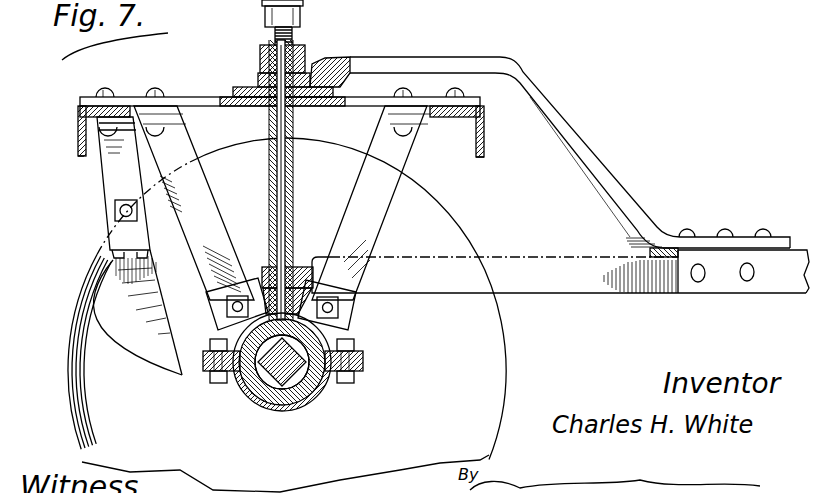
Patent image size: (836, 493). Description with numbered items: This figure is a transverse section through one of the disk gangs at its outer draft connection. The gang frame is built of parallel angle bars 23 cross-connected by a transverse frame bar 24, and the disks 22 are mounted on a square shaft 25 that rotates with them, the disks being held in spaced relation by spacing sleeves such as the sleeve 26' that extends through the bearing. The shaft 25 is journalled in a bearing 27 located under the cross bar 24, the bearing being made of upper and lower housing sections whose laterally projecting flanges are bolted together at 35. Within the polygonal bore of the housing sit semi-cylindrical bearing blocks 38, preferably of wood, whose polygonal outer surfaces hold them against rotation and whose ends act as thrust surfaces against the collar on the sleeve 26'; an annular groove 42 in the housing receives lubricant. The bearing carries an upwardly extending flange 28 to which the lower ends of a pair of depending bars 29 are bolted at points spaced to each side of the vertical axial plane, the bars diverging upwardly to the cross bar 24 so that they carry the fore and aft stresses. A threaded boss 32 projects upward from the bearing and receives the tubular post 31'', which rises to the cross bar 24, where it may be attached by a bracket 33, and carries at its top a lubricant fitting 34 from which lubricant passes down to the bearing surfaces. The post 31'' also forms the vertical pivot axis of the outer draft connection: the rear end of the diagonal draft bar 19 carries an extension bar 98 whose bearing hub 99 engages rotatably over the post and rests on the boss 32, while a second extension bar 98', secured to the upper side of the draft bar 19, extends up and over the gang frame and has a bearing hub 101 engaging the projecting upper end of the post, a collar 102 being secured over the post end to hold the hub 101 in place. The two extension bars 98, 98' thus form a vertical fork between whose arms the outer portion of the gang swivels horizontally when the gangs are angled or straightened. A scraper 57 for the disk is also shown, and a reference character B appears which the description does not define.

The diagonal draft bar 19 is at (792, 283).
The disk 22 is at (78, 447).
The angle bar 23 is at (80, 112).
The transverse frame bar 24 is at (202, 97).
The square shaft 25 is at (277, 400).
The spacing sleeve 26' is at (286, 400).
The bearing 27 is at (257, 421).
The upwardly extending flange 28 is at (253, 280).
The depending bars 29 is at (217, 225).
The pivot post 31'' is at (308, 180).
The threaded boss 32 is at (224, 300).
The bracket 33 is at (330, 90).
The lubricant fitting 34 is at (300, 8).
The bolted housing flanges 35 is at (213, 375).
The bearing blocks 38 is at (315, 400).
The annular groove 42 is at (327, 337).
The scrapers 57 is at (103, 280).
The extension bar 98 is at (559, 258).
The extension bar 98' is at (570, 157).
The bearing hub 99 is at (307, 267).
The bearing hub 101 is at (258, 78).
The collar 102 is at (262, 52).
The bracket B is at (143, 83).